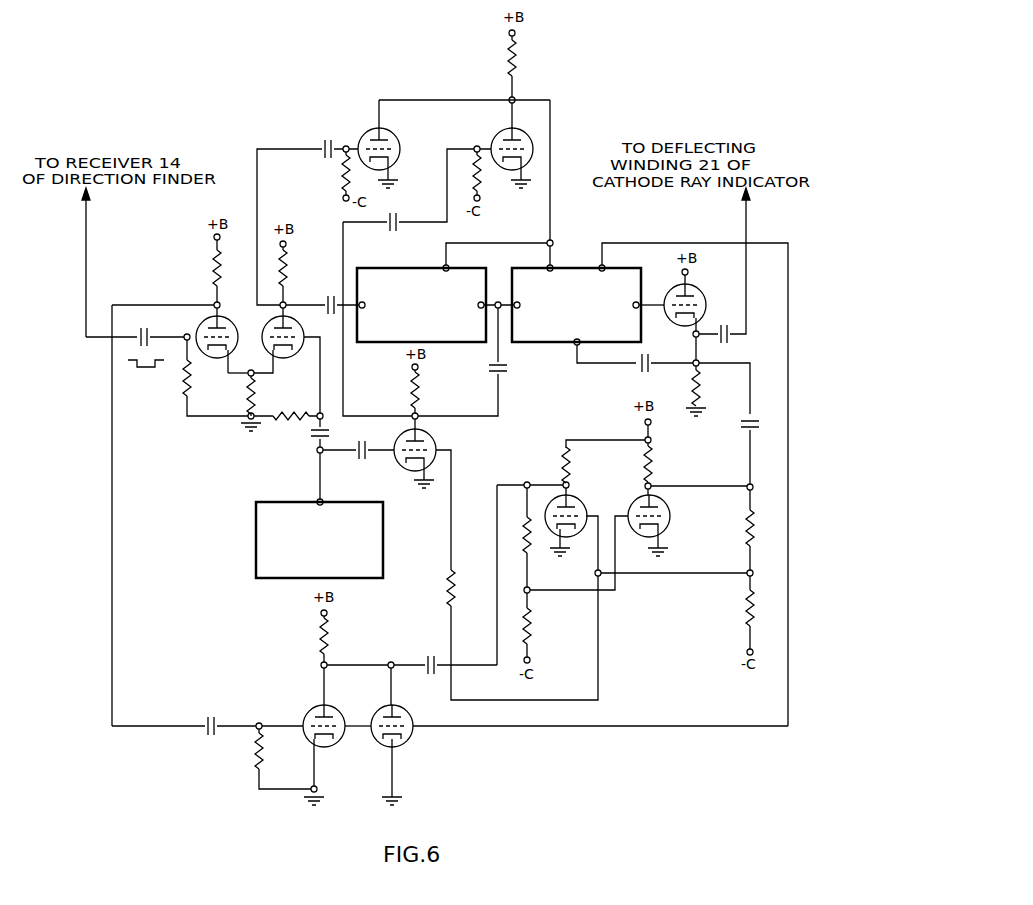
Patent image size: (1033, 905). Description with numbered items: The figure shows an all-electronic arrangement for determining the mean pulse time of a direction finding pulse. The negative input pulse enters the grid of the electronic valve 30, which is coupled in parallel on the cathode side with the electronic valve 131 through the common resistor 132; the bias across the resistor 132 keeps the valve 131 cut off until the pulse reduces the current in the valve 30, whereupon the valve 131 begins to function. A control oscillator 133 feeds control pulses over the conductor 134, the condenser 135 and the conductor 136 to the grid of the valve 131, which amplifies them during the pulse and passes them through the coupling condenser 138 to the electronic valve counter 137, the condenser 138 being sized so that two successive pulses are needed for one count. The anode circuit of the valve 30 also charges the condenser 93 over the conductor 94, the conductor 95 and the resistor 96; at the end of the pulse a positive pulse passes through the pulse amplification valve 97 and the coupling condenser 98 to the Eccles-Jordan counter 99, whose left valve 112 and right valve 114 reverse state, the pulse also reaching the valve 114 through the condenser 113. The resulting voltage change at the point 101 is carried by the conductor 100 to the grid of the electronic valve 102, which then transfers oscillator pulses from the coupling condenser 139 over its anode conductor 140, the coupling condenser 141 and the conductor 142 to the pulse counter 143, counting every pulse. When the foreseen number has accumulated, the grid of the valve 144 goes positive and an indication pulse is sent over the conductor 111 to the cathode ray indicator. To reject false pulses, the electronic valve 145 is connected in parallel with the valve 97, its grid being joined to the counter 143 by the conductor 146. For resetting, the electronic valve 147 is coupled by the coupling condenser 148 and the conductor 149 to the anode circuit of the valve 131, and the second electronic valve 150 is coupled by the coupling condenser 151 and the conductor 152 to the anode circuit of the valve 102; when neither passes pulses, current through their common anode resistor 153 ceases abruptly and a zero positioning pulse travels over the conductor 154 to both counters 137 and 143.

The electronic valve 30 is at (237, 329).
The electronic valve 131 is at (310, 322).
The resistor 132 is at (247, 406).
The conductor 136 is at (318, 398).
The coupling condenser 138 is at (333, 274).
The conductor 149 is at (303, 147).
The coupling condenser 148 is at (326, 142).
The electronic valve 147 is at (412, 128).
The second electronic valve 150 is at (506, 132).
The coupling condenser 151 is at (395, 230).
The anode resistor 153 is at (517, 77).
The conductor 154 is at (551, 184).
The electronic valve counter 137 is at (402, 265).
The pulse counter 143 is at (521, 265).
The conductor 142 is at (500, 345).
The coupling condenser 141 is at (506, 370).
The anode conductor 140 is at (498, 404).
The conductor 152 is at (344, 381).
The valve 144 is at (717, 292).
The conductor 111 is at (748, 325).
The condenser 113 is at (740, 424).
The Eccles-Jordan counter 99 is at (620, 465).
The left valve 112 is at (597, 496).
The right valve 114 is at (670, 524).
The point 101 is at (745, 578).
The conductor 100 is at (596, 670).
The conductor 146 is at (705, 726).
The conductor 94 is at (112, 655).
The condenser 93 is at (217, 690).
The conductor 95 is at (242, 732).
The resistor 96 is at (264, 764).
The pulse amplification valve 97 is at (312, 708).
The electronic valve 145 is at (420, 714).
The coupling condenser 98 is at (440, 645).
The electronic valve 102 is at (433, 447).
The control oscillator 133 is at (256, 530).
The conductor 134 is at (318, 482).
The condenser 135 is at (328, 433).
The coupling condenser 139 is at (364, 460).